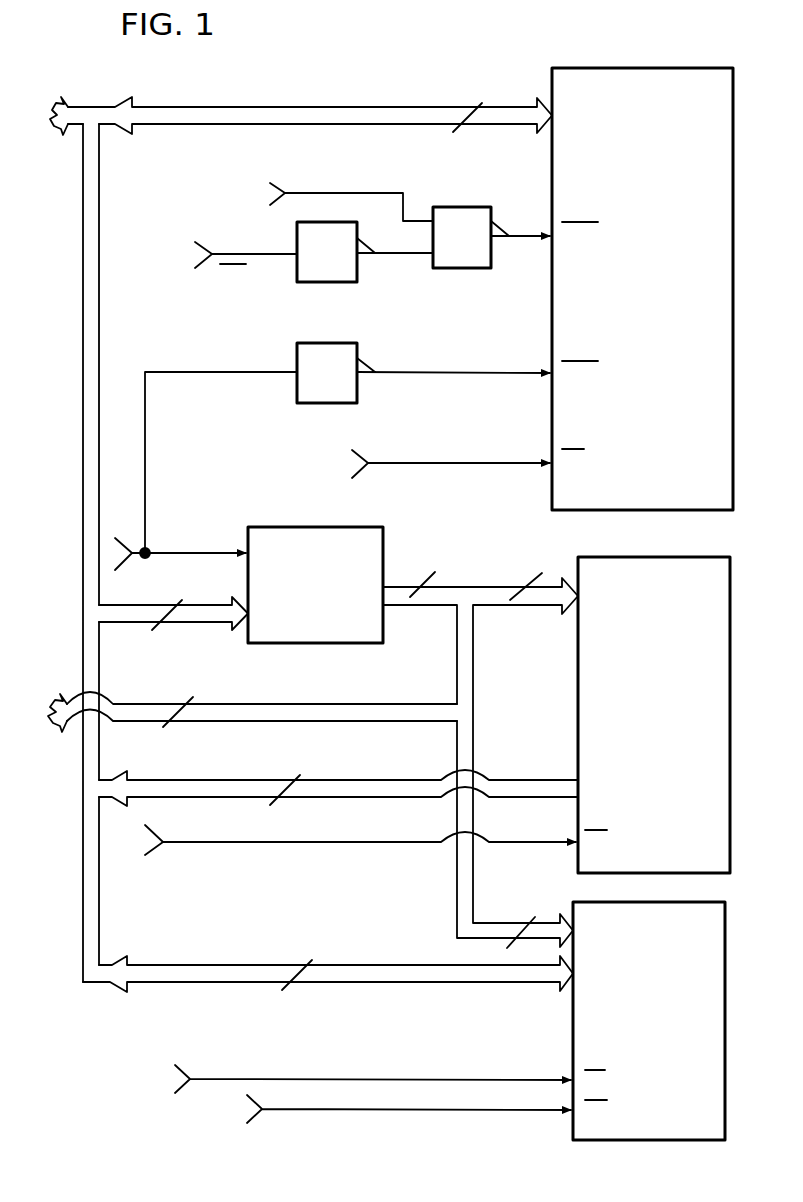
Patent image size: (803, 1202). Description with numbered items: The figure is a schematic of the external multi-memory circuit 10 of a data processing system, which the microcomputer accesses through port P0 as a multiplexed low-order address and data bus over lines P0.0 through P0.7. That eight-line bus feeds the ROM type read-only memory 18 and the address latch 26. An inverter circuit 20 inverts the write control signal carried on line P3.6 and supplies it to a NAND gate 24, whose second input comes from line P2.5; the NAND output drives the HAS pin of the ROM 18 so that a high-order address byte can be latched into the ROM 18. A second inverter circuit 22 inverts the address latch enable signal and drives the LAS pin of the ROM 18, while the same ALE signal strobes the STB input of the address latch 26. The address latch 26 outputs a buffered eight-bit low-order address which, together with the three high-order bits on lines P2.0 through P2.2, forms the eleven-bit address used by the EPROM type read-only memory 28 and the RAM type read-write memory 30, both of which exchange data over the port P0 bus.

The external multi-memory circuit 10 is at (360, 86).
The ROM type read-only memory 18 is at (610, 72).
The inverter circuit 20 is at (343, 272).
The inverter circuit 22 is at (350, 350).
The NAND gate 24 is at (460, 212).
The address latch 26 is at (312, 528).
The EPROM type read-only memory 28 is at (587, 698).
The RAM type read-write memory 30 is at (580, 1042).